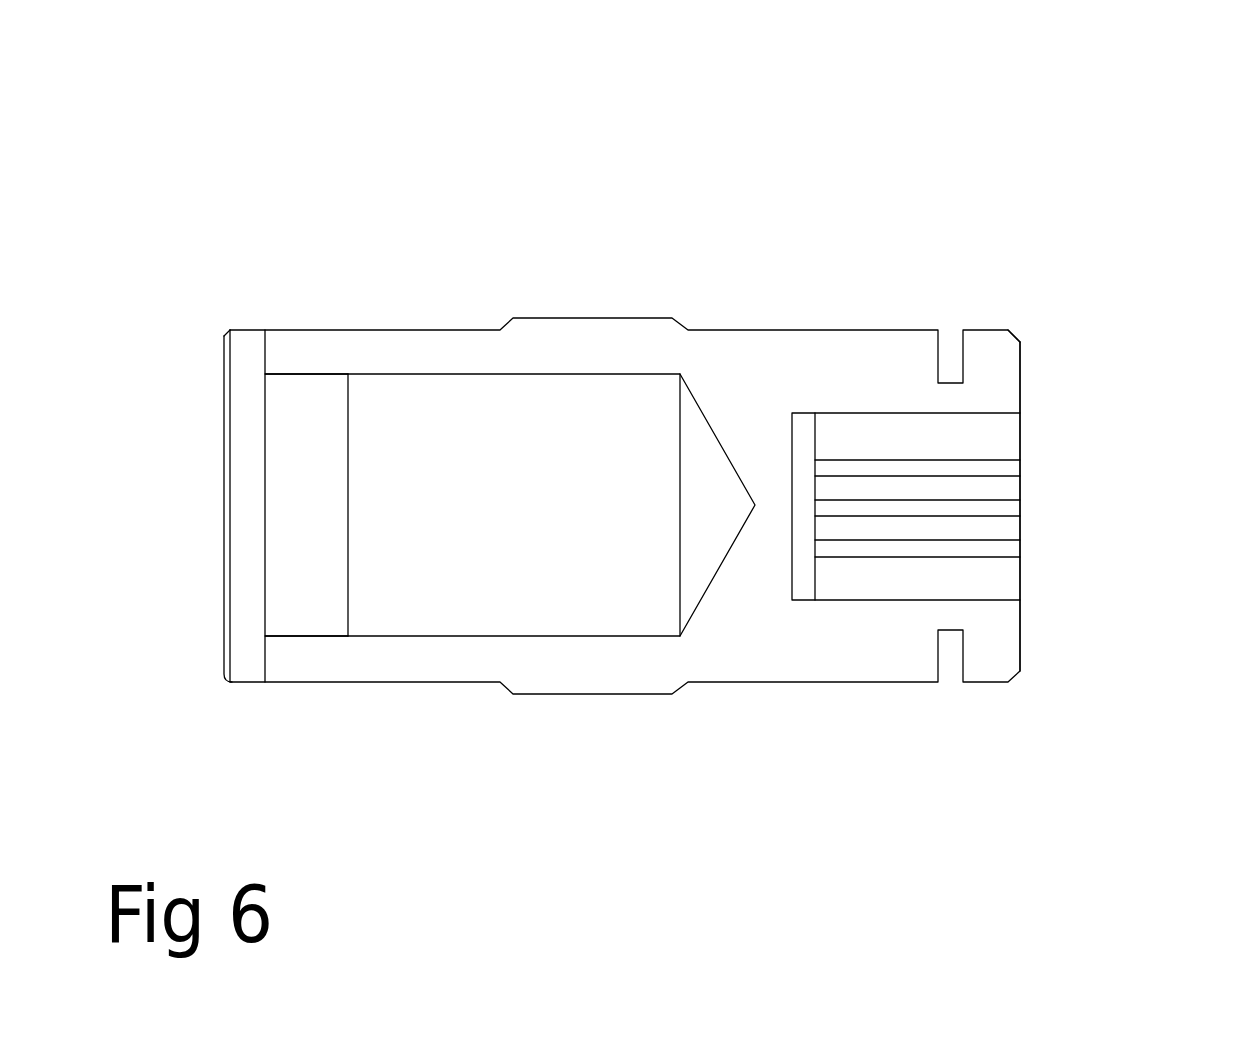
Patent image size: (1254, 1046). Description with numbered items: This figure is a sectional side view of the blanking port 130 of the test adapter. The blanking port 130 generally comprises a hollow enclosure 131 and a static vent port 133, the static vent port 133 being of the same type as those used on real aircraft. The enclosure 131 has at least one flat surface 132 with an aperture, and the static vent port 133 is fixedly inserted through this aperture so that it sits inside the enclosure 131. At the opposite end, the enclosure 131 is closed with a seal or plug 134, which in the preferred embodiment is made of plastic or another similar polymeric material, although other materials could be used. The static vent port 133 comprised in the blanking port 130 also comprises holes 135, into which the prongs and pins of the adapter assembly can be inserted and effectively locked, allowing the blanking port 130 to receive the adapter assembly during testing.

The blanking port 130 is at (727, 367).
The hollow enclosure 131 is at (748, 345).
The flat surface 132 is at (1027, 376).
The static vent port 133 is at (1020, 442).
The plug 134 is at (288, 412).
The holes 135 is at (1020, 470).